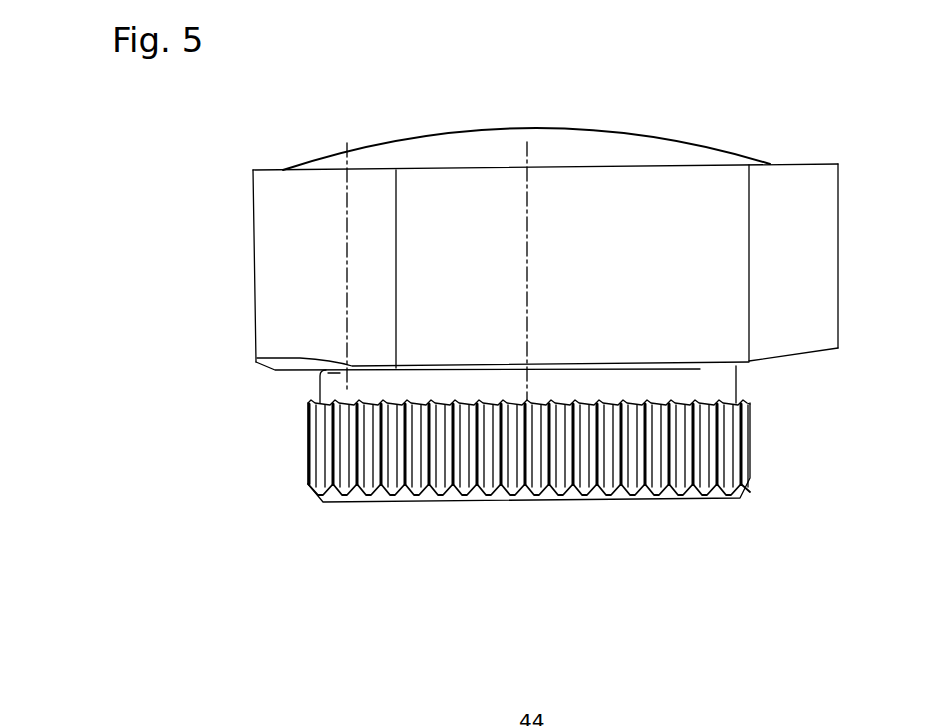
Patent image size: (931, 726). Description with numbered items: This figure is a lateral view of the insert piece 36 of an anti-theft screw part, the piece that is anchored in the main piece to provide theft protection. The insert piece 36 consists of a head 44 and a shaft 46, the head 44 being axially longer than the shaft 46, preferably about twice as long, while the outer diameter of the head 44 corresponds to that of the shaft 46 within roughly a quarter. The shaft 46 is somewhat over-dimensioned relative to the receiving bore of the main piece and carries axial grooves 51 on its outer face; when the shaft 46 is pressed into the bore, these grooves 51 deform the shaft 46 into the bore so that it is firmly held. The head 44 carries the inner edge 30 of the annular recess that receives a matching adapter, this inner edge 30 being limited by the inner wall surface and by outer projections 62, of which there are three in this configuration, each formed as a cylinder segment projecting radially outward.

The insert piece 36 is at (197, 243).
The inner edge 30 is at (476, 220).
The head 44 is at (602, 193).
The outer projections 62 is at (802, 227).
The shaft 46 is at (318, 405).
The axial grooves 51 is at (343, 465).